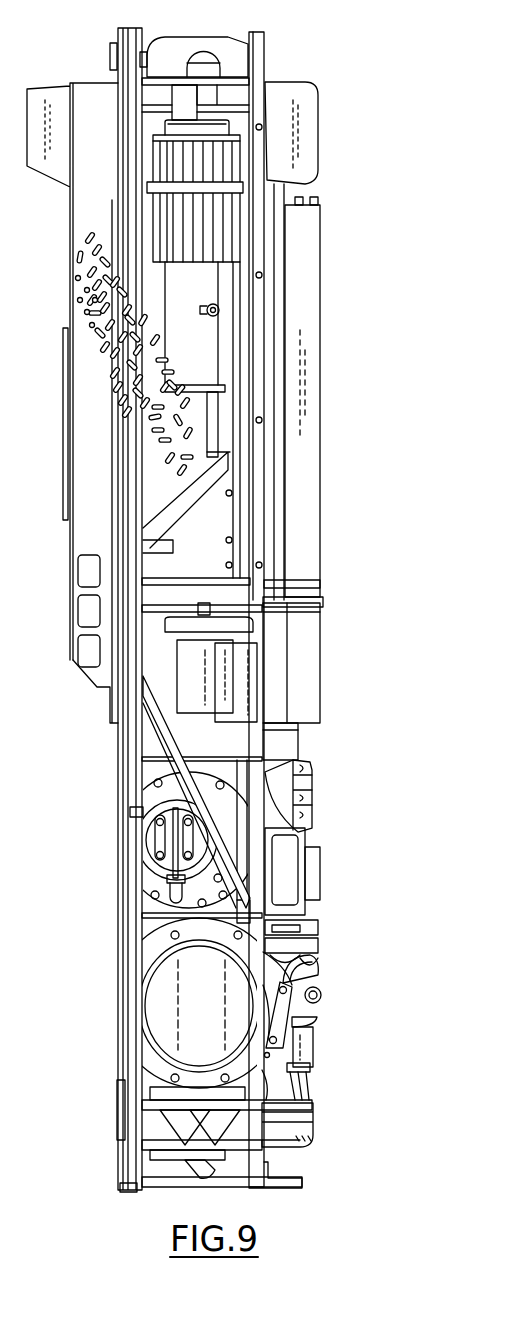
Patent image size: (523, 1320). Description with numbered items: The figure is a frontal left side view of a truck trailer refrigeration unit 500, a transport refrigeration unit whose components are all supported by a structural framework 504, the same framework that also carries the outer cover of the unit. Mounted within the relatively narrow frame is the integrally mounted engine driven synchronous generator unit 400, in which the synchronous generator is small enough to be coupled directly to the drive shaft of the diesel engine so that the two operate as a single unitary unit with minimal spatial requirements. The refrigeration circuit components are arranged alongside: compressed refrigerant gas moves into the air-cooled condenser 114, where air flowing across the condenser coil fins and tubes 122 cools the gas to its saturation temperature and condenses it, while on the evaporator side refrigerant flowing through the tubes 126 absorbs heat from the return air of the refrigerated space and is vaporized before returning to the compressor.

The truck trailer refrigeration unit 500 is at (419, 76).
The structural framework 504 is at (252, 33).
The evaporator tubes 126 is at (92, 327).
The air-cooled condenser 114 is at (356, 397).
The condenser coil fins and tubes 122 is at (307, 393).
The integrally mounted engine driven synchronous generator unit 400 is at (322, 870).